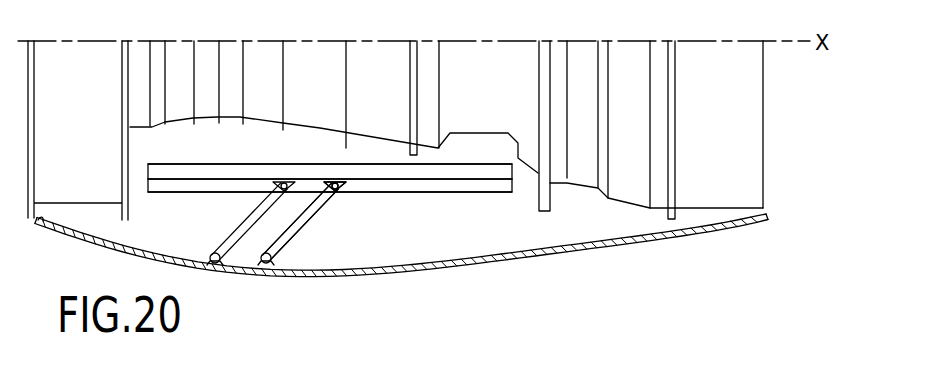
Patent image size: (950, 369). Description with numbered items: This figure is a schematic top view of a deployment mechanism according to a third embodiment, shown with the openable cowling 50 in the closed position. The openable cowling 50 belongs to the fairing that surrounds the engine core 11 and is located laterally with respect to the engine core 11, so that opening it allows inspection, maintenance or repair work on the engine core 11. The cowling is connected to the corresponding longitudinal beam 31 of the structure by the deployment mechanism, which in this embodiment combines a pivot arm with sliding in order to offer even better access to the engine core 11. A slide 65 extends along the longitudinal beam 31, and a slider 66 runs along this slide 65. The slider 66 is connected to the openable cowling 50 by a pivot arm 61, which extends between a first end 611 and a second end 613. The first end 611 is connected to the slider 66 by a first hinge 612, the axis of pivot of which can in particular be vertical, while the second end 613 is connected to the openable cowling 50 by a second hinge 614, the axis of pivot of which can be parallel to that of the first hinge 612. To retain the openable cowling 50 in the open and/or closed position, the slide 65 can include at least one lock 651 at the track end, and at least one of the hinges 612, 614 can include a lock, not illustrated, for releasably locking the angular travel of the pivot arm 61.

The engine core 11 is at (487, 60).
The longitudinal beam 31 is at (207, 190).
The openable cowling 50 is at (669, 243).
The pivot arm 61 is at (302, 223).
The first end 611 is at (325, 198).
The first hinge 612 is at (348, 184).
The second end 613 is at (280, 250).
The second hinge 614 is at (264, 266).
The slide 65 is at (433, 181).
The lock 651 is at (177, 190).
The slider 66 is at (332, 182).